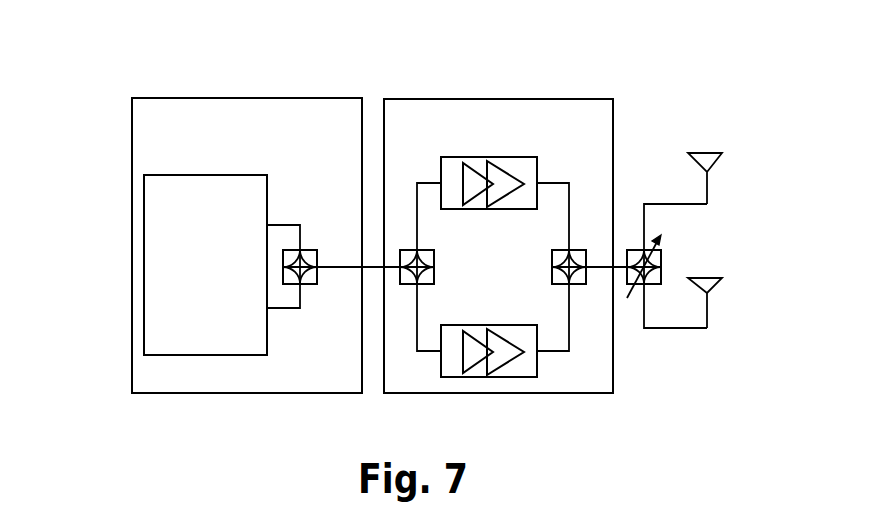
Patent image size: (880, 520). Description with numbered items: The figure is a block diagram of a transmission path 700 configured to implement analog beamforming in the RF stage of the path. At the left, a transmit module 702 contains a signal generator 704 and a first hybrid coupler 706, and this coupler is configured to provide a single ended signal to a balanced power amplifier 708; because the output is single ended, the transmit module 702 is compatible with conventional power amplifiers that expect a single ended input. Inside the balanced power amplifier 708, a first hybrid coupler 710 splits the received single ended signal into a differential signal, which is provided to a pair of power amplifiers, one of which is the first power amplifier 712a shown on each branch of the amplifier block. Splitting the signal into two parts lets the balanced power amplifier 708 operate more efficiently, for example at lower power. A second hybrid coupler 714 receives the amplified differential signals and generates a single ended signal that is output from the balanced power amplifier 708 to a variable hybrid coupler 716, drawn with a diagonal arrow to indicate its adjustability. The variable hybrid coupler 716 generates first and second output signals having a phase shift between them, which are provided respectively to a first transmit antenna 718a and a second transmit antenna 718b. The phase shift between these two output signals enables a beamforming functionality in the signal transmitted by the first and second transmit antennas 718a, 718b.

The transmission path 700 is at (85, 33).
The transmit module 702 is at (263, 158).
The signal generator 704 is at (221, 303).
The first hybrid coupler 706 is at (302, 249).
The balanced power amplifier 708 is at (588, 143).
The first hybrid coupler 710 is at (428, 251).
The first power amplifier 712a is at (540, 167).
The second hybrid coupler 714 is at (553, 250).
The variable hybrid coupler 716 is at (662, 253).
The first transmit antenna 718a is at (711, 152).
The second transmit antenna 718b is at (711, 277).